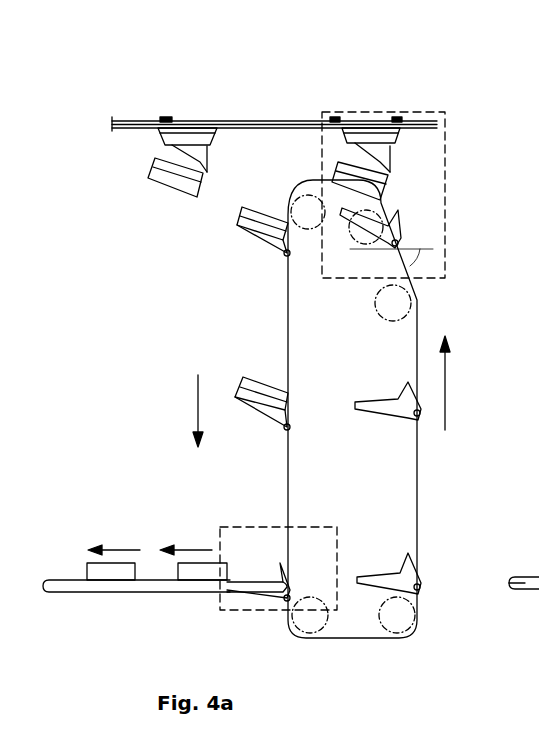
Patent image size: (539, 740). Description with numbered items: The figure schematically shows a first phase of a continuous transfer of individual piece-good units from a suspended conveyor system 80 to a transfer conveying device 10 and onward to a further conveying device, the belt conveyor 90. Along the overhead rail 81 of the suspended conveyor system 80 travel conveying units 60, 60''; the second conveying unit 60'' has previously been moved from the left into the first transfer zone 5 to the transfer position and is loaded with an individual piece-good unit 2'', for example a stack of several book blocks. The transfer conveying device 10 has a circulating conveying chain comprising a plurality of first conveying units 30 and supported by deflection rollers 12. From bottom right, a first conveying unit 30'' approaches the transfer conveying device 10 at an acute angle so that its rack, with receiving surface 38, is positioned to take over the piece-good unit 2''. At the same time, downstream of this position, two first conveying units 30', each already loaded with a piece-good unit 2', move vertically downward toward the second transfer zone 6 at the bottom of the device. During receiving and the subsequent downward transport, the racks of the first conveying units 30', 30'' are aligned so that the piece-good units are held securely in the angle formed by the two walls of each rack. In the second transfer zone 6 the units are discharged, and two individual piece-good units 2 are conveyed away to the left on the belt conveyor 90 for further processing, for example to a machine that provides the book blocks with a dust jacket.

The suspended conveyor system 80 is at (316, 62).
The rail 81 is at (250, 120).
The first transfer zone 5 is at (397, 110).
The carriage 60 is at (139, 162).
The second conveying unit 60'' is at (422, 154).
The individual piece-good unit 2'' is at (327, 171).
The transfer conveying device 10 is at (140, 382).
The deflection roller 12 is at (403, 305).
The first conveying unit 30'' is at (416, 225).
The flap receiving surface 38 is at (388, 385).
The first conveying unit 30 is at (409, 422).
The first conveying unit 30' is at (247, 444).
The individual piece-good unit 2' is at (240, 308).
The second transfer zone 6 is at (337, 582).
The belt conveyor 90 is at (100, 625).
The individual piece-good unit 2 is at (293, 597).